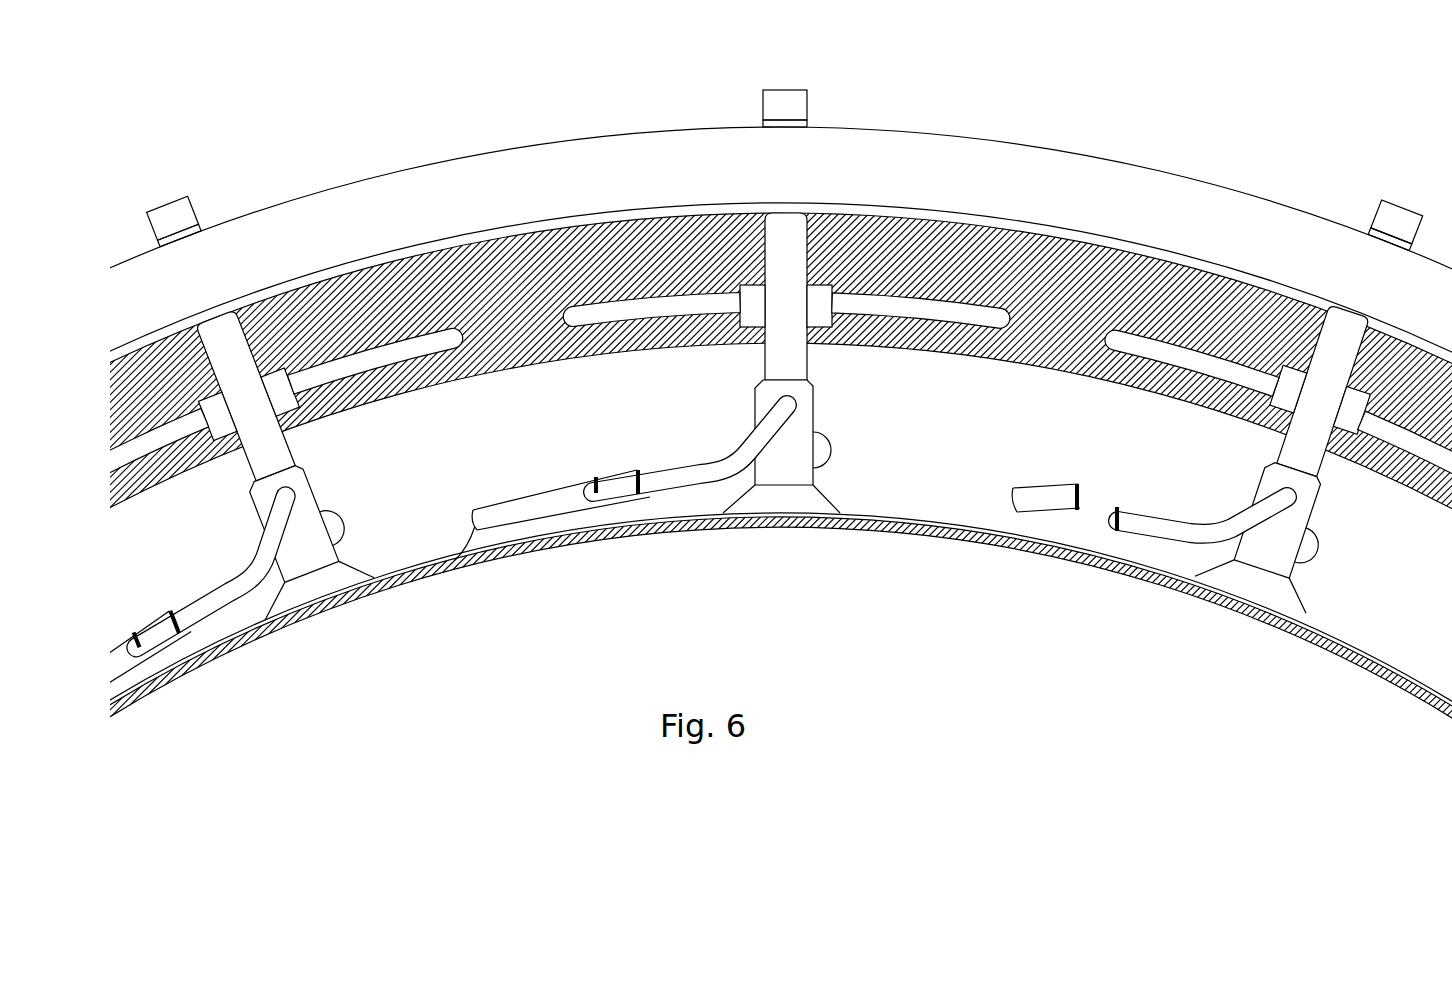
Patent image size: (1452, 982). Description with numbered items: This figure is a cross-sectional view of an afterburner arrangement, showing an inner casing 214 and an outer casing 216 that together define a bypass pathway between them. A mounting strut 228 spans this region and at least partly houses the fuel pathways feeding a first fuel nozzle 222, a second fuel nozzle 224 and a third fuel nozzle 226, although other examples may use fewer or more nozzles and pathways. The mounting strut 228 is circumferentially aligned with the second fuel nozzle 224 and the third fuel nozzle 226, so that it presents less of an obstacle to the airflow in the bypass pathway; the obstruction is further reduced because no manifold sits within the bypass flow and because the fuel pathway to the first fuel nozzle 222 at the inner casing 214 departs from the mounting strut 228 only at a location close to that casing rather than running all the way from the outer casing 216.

The inner casing 214 is at (413, 580).
The outer casing 216 is at (370, 212).
The first fuel nozzle 222 is at (533, 526).
The second fuel nozzle 224 is at (782, 445).
The third fuel nozzle 226 is at (852, 293).
The mounting strut 228 is at (720, 214).